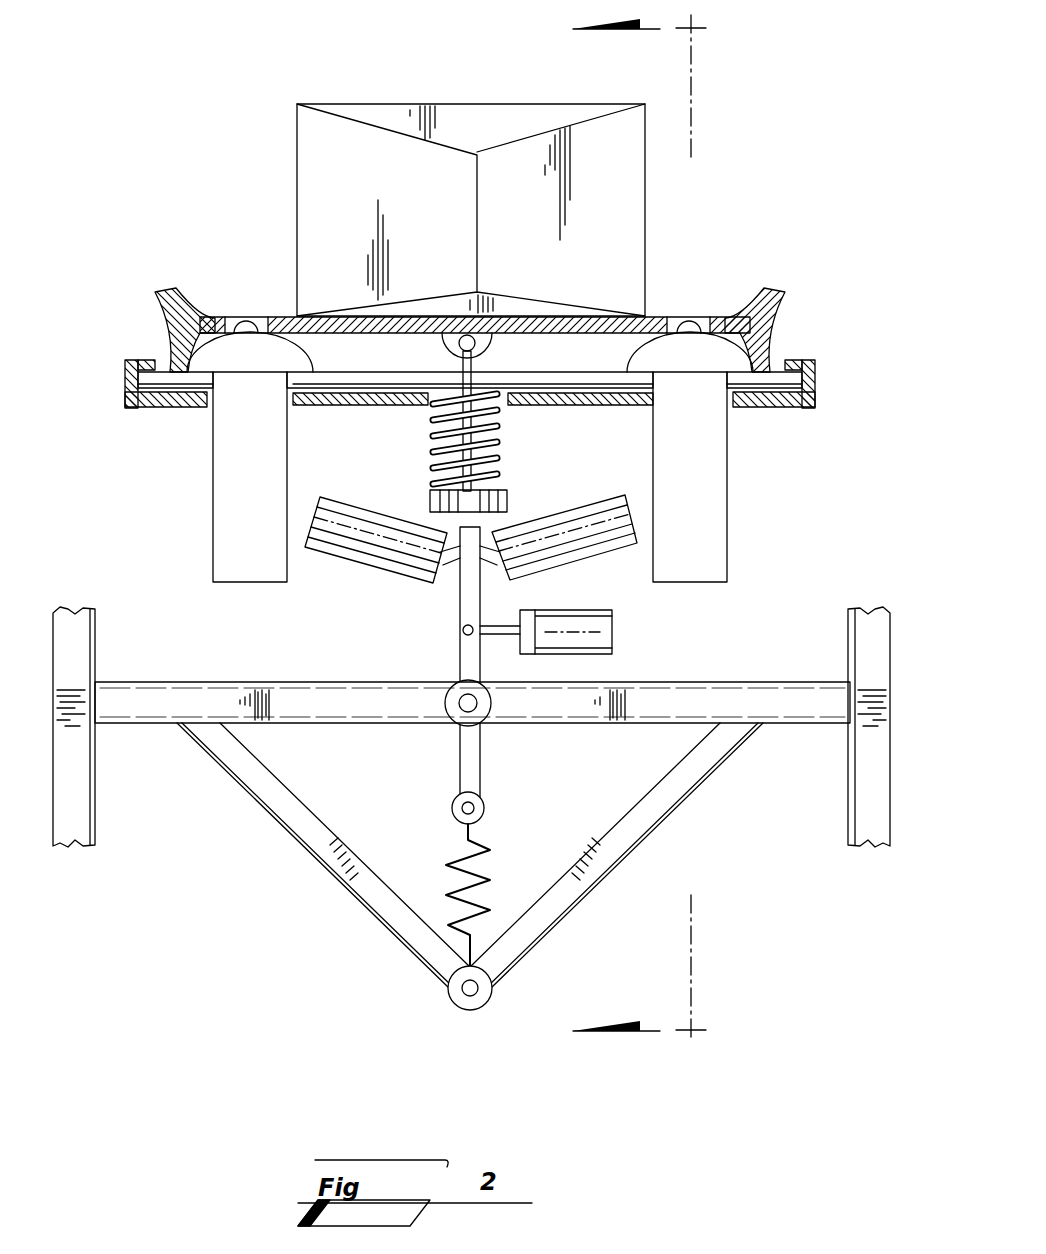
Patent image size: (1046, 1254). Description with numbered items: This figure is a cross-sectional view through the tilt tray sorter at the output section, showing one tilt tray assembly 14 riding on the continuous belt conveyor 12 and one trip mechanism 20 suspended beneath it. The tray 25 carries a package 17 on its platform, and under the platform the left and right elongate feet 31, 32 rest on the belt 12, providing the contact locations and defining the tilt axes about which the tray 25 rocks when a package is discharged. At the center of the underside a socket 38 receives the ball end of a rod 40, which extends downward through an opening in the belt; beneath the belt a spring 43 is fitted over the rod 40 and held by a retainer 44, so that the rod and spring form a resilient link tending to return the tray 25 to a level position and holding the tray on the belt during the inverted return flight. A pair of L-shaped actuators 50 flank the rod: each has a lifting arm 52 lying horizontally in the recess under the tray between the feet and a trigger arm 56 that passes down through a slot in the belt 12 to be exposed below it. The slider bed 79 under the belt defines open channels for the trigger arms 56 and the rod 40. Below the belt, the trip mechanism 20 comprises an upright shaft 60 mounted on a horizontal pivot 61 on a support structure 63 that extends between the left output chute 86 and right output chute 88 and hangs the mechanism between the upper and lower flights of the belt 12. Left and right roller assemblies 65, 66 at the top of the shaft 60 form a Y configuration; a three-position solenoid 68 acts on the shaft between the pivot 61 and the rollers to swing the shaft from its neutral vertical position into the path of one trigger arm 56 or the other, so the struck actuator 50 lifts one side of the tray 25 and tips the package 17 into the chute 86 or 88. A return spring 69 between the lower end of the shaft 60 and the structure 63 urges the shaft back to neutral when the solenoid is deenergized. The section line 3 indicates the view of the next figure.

The section line 3- 3 is at (657, 531).
The continuous belt conveyor 12 is at (456, 426).
The tilt tray assembly 14 is at (438, 195).
The package 17 is at (487, 120).
The trip mechanism 20 is at (528, 705).
The tray 25 is at (583, 315).
The left elongate foot 31 is at (768, 333).
The right elongate foot 32 is at (163, 340).
The socket 38 is at (460, 352).
The rod 40 is at (467, 362).
The spring 43 is at (493, 440).
The retainer 44 is at (427, 507).
The actuator 50 is at (197, 480).
The lifting arm 52 is at (313, 340).
The trigger arm 56 is at (237, 557).
The upright shaft 60 is at (468, 603).
The horizontal pivot 61 is at (447, 707).
The support structure 63 is at (803, 700).
The left roller assembly 65 is at (548, 508).
The right roller assembly 66 is at (360, 505).
The three-position solenoid 68 is at (555, 655).
The return spring 69 is at (480, 877).
The slider bed 79 is at (158, 408).
The left output chute 86 is at (870, 792).
The right output chute 88 is at (77, 640).